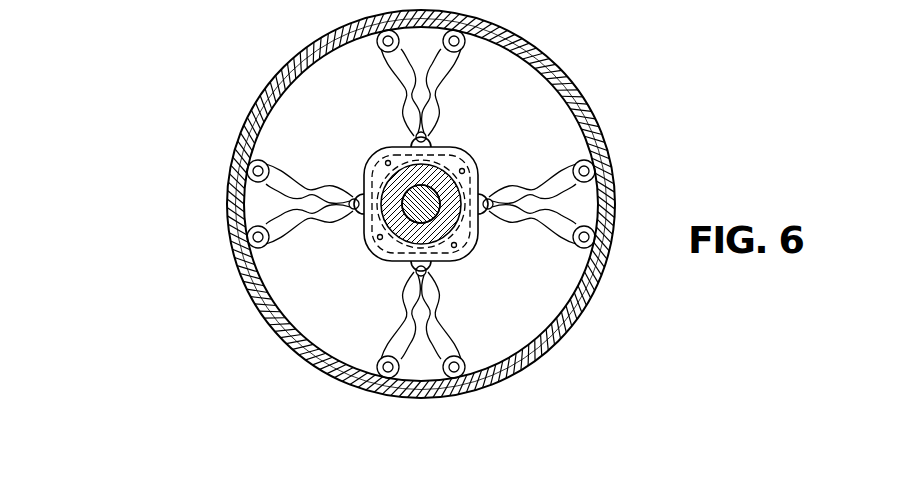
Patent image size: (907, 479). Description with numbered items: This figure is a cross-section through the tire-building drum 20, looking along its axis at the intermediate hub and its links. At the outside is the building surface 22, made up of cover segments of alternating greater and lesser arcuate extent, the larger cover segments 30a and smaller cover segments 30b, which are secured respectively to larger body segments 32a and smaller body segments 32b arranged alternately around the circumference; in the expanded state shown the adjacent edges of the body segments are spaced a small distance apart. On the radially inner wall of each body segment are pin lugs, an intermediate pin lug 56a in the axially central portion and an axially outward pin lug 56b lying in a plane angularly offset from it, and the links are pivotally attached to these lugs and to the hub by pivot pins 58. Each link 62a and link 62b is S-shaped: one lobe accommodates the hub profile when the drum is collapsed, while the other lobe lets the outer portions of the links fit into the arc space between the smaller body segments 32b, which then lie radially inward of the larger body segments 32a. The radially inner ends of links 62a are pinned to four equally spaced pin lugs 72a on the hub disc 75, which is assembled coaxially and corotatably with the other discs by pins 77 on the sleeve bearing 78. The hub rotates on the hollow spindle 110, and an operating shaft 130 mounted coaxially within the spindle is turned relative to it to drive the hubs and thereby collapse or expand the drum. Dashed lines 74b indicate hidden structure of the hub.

The drum 20 is at (258, 80).
The building surface 22 is at (566, 68).
The cover segment of larger arcuate extent 30a is at (500, 24).
The cover segment of lesser arcuate extent 30b is at (322, 42).
The larger body segment 32a is at (363, 20).
The smaller body segment 32b is at (305, 56).
The intermediate pin lug 56a is at (462, 48).
The axially outward pin lug 56b is at (382, 50).
The pivot pin 58 is at (250, 228).
The link 62a is at (441, 97).
The link 62b is at (401, 97).
The pin lug 72a is at (430, 137).
The hub flange 74b is at (400, 132).
The hub disc 75 is at (452, 160).
The pin 77 is at (388, 160).
The sleeve bearing 78 is at (378, 190).
The hollow spindle 110 is at (392, 243).
The operating shaft 130 is at (395, 185).